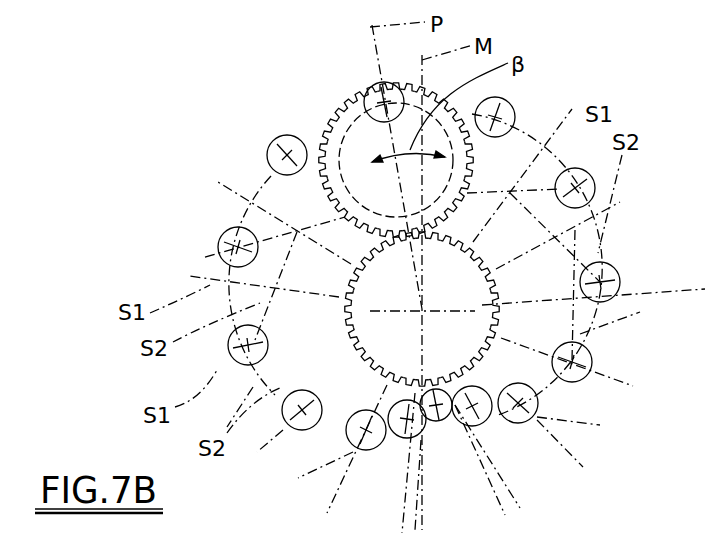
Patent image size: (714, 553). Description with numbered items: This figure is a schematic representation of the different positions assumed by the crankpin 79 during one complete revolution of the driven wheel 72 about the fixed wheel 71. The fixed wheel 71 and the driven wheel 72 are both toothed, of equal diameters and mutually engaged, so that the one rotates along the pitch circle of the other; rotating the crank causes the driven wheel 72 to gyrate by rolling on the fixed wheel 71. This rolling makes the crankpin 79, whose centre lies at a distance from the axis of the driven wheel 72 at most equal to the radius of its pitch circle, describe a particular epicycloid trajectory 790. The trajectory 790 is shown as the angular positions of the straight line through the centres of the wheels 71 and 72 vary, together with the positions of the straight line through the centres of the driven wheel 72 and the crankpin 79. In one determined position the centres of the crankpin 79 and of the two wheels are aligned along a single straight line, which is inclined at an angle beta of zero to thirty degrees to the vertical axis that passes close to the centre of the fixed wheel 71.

The fixed first wheel 71 is at (500, 338).
The second wheel 72 is at (340, 107).
The crankpin 79 is at (268, 143).
The epicycloid trajectory 790 is at (530, 128).